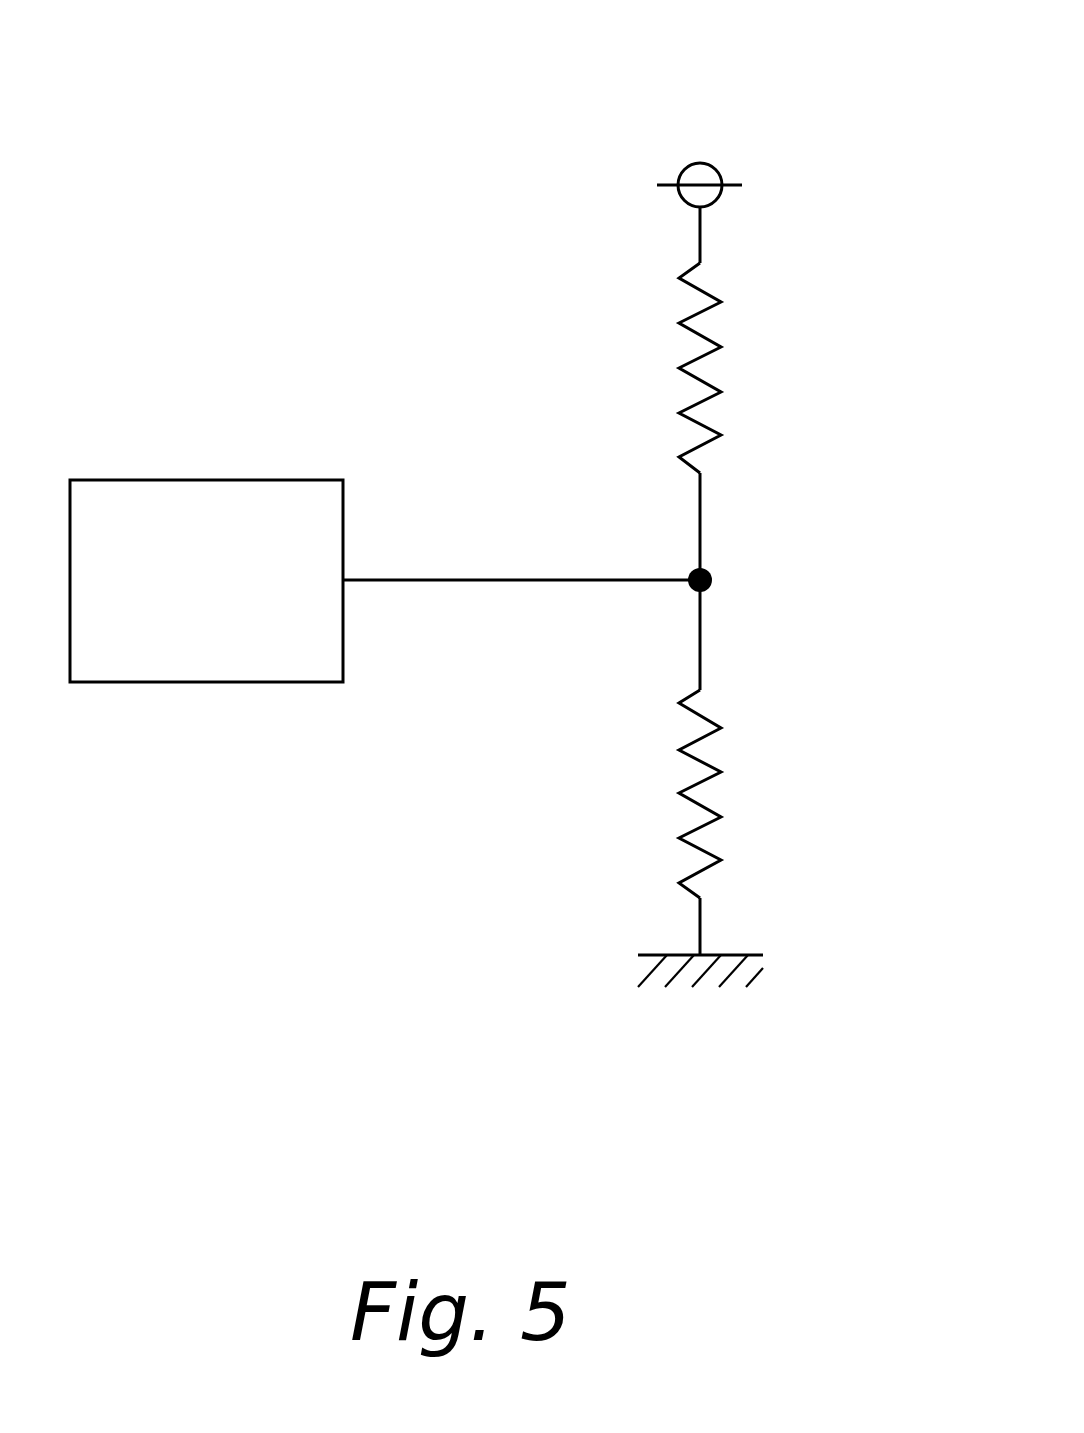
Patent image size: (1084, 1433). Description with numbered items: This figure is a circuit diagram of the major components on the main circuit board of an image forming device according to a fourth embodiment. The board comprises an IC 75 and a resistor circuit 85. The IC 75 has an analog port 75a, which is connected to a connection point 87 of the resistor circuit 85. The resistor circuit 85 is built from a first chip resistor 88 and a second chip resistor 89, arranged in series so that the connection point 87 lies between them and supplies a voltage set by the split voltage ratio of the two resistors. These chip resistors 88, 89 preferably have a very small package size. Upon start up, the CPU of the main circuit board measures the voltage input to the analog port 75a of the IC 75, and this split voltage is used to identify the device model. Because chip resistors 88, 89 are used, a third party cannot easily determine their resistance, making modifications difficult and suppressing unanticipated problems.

The IC 75 is at (138, 682).
The analog port 75a is at (452, 580).
The resistor circuit 85 is at (790, 147).
The connection point 87 is at (714, 574).
The first chip resistor 88 is at (750, 325).
The second chip resistor 89 is at (733, 852).